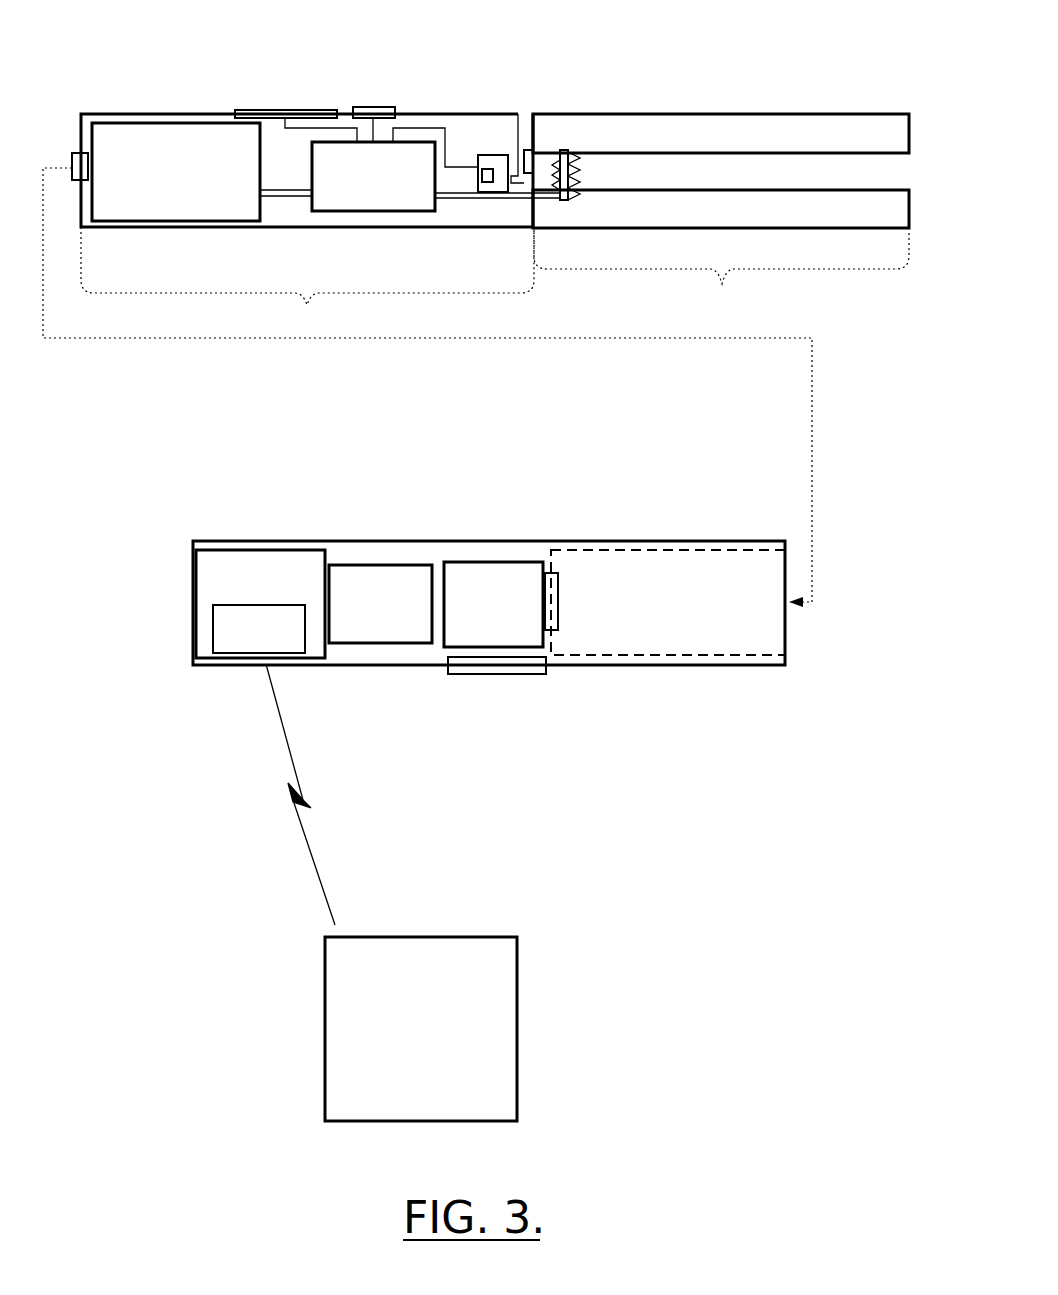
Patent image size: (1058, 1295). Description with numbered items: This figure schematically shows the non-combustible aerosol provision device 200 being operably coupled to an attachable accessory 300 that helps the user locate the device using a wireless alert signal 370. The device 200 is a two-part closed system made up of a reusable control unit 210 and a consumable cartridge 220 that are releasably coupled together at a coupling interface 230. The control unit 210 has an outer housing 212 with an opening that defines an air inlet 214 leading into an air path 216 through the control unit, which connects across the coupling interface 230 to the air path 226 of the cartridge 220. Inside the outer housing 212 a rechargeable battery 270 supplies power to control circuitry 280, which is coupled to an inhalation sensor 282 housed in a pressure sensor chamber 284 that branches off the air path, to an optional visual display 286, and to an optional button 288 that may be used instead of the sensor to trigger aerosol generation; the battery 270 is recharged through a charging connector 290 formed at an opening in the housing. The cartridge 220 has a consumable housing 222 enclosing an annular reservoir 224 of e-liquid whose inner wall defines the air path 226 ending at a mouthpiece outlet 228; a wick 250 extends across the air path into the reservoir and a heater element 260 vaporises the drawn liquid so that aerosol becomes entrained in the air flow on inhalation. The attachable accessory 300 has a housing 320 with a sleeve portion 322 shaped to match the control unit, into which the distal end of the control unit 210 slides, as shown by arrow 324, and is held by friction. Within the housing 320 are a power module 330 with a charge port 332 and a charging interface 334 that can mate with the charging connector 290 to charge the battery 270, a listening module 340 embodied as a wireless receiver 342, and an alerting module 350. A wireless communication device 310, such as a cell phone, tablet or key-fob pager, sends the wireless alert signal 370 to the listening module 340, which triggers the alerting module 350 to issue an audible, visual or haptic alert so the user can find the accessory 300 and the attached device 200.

The non-combustible aerosol provision device 200 is at (829, 58).
The control unit 210 is at (362, 170).
The outer housing 212 is at (125, 228).
The air inlet 214 is at (521, 108).
The air path 216 is at (526, 145).
The cartridge 220 is at (747, 193).
The consumable housing 222 is at (702, 113).
The reservoir 224 is at (870, 145).
The air path 226 is at (768, 183).
The mouthpiece outlet 228 is at (886, 171).
The coupling interface 230 is at (534, 213).
The wick 250 is at (560, 150).
The heater element 260 is at (573, 170).
The battery 270 is at (122, 127).
The control circuitry 280 is at (365, 213).
The inhalation sensor 282 is at (488, 170).
The pressure sensor chamber 284 is at (480, 193).
The visual display 286 is at (307, 110).
The button 288 is at (373, 107).
The charging connector 290 is at (83, 166).
The attachable accessory 300 is at (533, 492).
The wireless communication device 310 is at (517, 1004).
The housing 320 is at (652, 667).
The sleeve portion 322 is at (738, 634).
The arrow 324 is at (813, 488).
The power module 330 is at (493, 562).
The charge port 332 is at (490, 674).
The charging interface 334 is at (556, 572).
The listening module 340 is at (245, 548).
The wireless receiver 342 is at (230, 652).
The alerting module 350 is at (383, 565).
The wireless alert signal 370 is at (288, 787).